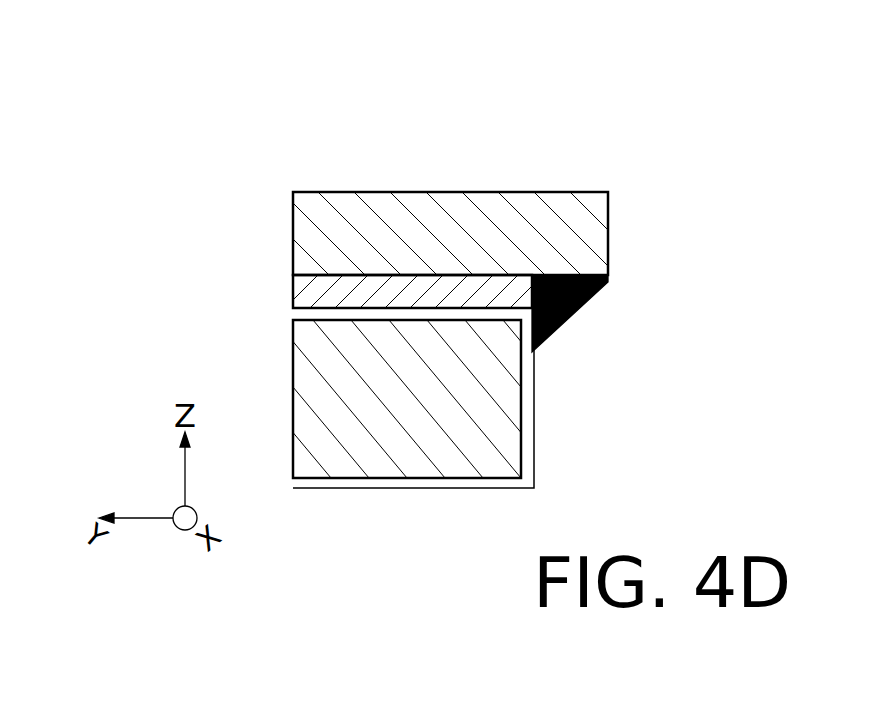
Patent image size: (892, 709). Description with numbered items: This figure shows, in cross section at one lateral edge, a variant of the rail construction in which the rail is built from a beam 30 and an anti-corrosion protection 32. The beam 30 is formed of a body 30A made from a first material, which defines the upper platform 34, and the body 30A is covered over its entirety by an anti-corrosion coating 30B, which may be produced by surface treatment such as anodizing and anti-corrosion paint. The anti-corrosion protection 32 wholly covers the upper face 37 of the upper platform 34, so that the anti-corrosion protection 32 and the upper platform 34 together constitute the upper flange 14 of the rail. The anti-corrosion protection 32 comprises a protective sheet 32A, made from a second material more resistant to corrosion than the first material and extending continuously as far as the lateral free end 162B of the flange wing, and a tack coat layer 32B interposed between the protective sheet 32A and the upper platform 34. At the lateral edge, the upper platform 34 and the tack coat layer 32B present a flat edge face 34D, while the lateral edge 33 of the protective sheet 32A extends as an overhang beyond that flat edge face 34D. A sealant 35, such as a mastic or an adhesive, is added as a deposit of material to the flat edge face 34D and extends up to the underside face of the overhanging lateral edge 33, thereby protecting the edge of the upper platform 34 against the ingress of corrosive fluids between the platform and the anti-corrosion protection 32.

The upper flange 14 is at (262, 190).
The anti-corrosion protection 32 is at (483, 135).
The protective sheet 32A is at (336, 215).
The tack coat layer 32B is at (402, 292).
The upper face 37 is at (494, 305).
The lateral edge 33 is at (600, 282).
The sealant 35 is at (560, 330).
The beam 30 is at (497, 563).
The body 30A is at (355, 440).
The anti-corrosion coating 30B is at (445, 470).
The upper platform 34 is at (507, 452).
The flat edge face 34D is at (534, 440).
The lateral free end 162B is at (534, 425).